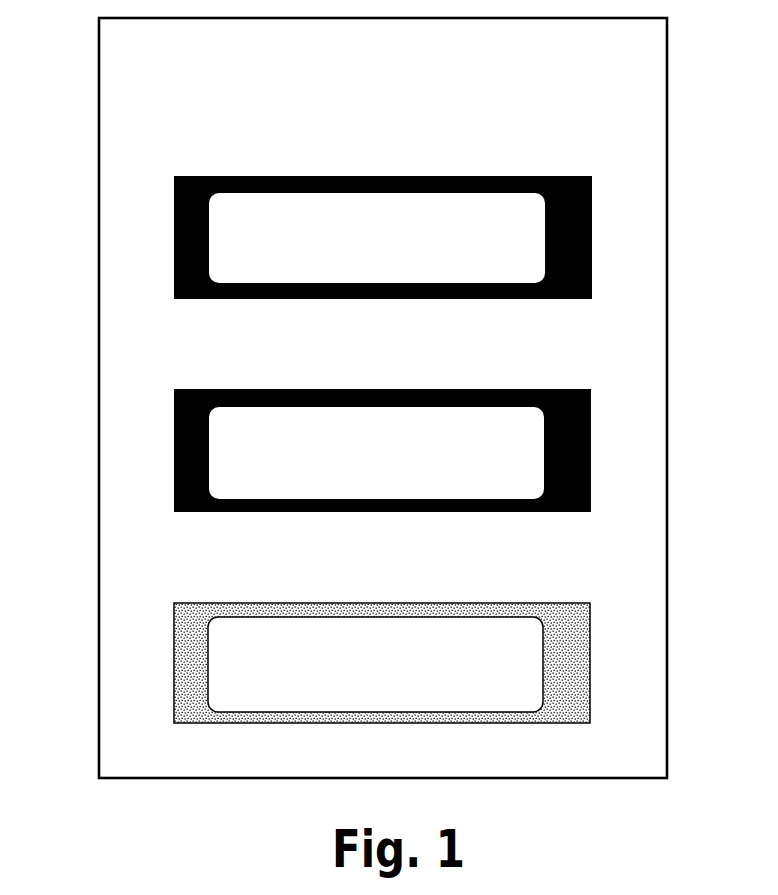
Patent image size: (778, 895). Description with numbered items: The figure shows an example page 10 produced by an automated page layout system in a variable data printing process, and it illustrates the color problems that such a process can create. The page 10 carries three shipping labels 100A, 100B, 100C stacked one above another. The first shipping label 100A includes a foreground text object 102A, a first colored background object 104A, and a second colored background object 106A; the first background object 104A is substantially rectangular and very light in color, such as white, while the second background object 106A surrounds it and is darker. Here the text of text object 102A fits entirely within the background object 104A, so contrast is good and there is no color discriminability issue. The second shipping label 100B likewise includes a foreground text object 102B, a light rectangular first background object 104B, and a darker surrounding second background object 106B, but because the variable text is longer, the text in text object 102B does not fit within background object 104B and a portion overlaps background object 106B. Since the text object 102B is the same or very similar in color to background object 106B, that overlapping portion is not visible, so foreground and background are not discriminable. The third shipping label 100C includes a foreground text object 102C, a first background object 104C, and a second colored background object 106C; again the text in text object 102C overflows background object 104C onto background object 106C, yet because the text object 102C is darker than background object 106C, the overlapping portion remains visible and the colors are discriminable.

The page 10 is at (667, 63).
The shipping label 100A is at (380, 221).
The foreground text object 102A is at (280, 243).
The first colored background object 104A is at (517, 273).
The second colored background object 106A is at (592, 243).
The shipping label 100B is at (381, 433).
The foreground text object 102B is at (220, 428).
The first colored background object 104B is at (502, 488).
The second colored background object 106B is at (592, 447).
The shipping label 100C is at (377, 647).
The foreground text object 102C is at (220, 635).
The first background object 104C is at (500, 703).
The second colored background object 106C is at (590, 648).